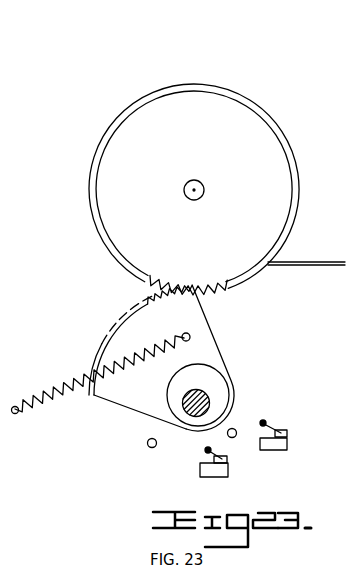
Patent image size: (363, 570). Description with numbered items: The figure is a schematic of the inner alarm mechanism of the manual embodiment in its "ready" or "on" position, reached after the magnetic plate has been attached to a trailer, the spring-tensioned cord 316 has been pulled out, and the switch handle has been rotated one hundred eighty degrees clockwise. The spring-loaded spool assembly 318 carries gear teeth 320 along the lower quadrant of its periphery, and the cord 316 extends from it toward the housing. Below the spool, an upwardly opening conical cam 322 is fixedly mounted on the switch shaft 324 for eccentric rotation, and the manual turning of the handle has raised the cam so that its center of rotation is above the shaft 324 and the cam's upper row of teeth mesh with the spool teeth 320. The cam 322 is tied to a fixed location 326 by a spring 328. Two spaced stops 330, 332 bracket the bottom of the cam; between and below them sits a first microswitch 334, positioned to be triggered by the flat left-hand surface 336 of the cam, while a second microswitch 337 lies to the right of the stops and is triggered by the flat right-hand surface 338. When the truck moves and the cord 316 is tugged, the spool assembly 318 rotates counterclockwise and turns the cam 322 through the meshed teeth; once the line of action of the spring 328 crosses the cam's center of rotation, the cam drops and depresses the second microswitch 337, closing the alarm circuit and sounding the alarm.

The spring-tensioned cord 316 is at (311, 262).
The spring-loaded spool assembly 318 is at (217, 85).
The gear teeth 320 is at (214, 289).
The conical cam 322 is at (139, 312).
The switch shaft 324 is at (208, 398).
The fixed location 326 is at (15, 418).
The spring 328 is at (48, 390).
The stop 330 is at (149, 447).
The stop 332 is at (236, 438).
The first microswitch 334 is at (212, 471).
The flat left-hand surface 336 is at (109, 407).
The second microswitch 337 is at (287, 447).
The flat right-hand surface 338 is at (216, 330).